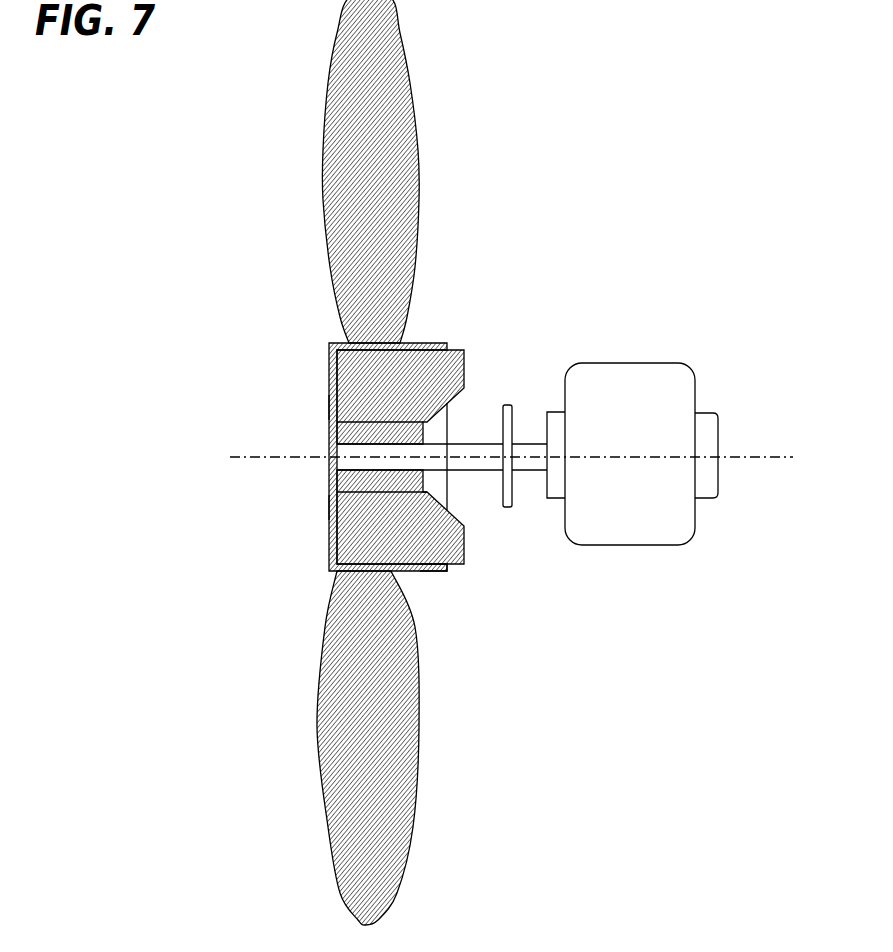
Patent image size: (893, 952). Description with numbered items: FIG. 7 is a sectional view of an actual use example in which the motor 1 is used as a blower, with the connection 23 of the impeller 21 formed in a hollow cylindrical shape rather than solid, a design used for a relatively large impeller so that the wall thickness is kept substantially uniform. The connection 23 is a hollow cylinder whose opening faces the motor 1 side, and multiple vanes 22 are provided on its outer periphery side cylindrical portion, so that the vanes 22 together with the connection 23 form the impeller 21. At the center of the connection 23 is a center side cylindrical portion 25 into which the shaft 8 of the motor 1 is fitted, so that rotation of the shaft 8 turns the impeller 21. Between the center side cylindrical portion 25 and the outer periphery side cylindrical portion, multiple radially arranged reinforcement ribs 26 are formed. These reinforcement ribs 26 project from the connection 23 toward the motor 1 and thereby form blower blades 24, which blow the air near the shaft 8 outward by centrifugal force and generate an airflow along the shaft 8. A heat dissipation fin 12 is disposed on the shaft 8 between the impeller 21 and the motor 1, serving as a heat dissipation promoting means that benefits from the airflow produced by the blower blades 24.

The motor 1 is at (638, 363).
The shaft 8 is at (472, 470).
The heat dissipation fin 12 is at (515, 498).
The impeller 21 is at (328, 365).
The vanes 22 is at (325, 158).
The connection 23 is at (413, 343).
The blower blades 24 is at (458, 566).
The center side cylindrical portion 25 is at (330, 508).
The reinforcement ribs 26 is at (338, 411).